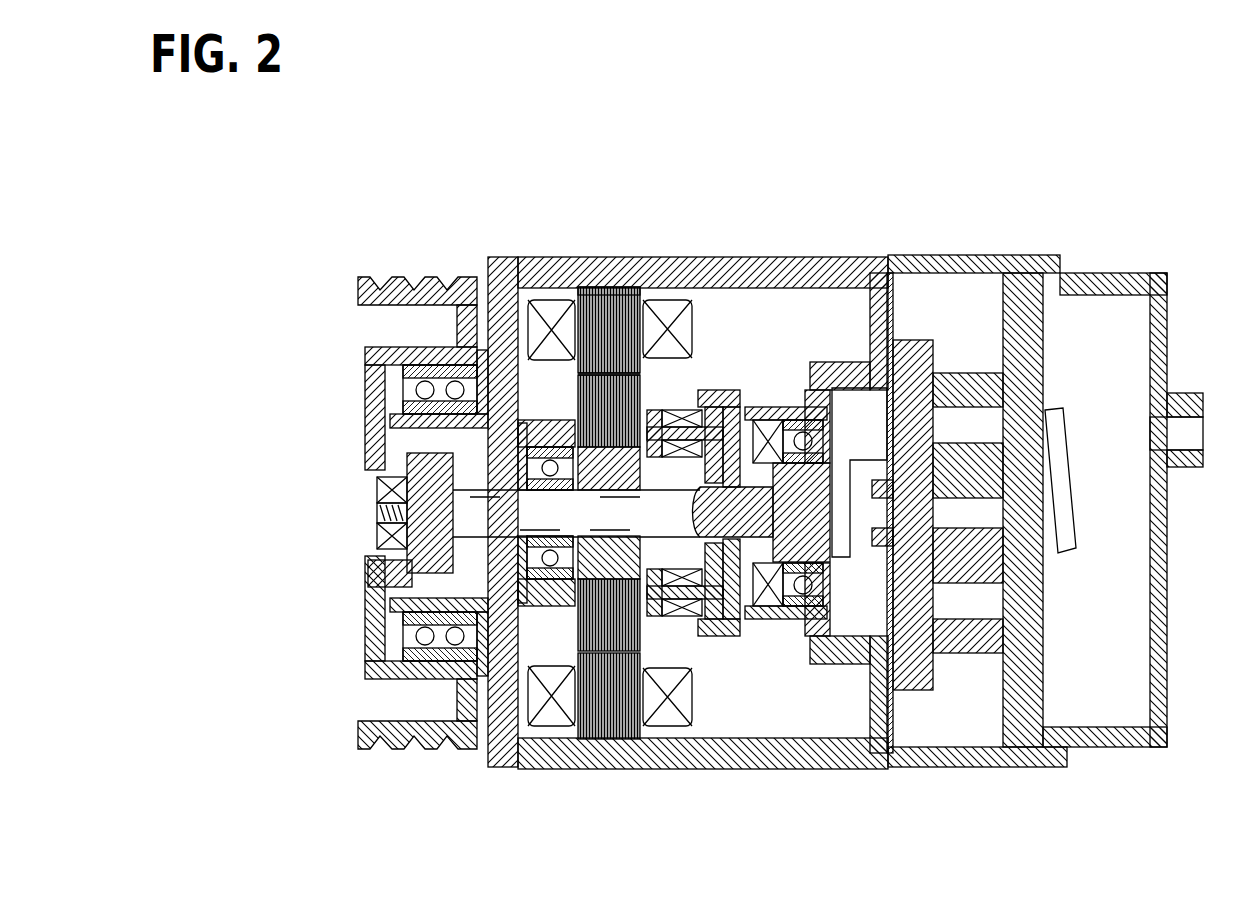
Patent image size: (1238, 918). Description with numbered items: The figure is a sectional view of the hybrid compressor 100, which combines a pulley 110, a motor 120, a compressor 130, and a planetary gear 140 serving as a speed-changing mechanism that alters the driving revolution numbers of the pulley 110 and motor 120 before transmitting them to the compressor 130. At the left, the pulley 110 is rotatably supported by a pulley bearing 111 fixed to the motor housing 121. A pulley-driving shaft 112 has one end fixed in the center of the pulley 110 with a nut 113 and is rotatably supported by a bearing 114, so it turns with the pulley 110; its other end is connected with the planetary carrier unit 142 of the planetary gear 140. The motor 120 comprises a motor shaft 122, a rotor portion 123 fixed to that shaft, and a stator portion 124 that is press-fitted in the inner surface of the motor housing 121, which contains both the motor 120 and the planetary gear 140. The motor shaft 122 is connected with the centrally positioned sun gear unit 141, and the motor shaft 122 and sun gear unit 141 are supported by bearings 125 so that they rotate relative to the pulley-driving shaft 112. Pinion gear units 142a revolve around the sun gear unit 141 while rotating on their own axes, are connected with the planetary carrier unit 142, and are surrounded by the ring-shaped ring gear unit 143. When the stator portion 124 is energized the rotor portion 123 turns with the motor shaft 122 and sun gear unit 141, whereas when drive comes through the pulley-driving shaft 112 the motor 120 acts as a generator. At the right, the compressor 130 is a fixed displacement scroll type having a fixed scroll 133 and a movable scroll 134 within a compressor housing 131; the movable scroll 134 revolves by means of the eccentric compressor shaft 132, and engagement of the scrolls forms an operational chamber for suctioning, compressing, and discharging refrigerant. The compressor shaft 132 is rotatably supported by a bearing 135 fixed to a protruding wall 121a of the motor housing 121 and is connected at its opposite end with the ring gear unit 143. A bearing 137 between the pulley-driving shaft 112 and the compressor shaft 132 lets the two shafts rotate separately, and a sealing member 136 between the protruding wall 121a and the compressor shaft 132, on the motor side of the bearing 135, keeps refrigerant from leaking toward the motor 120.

The hybrid compressor 100 is at (481, 240).
The pulley 110 is at (440, 277).
The pulley bearing 111 is at (430, 393).
The pulley-driving shaft 112 is at (553, 507).
The nut 113 is at (380, 492).
The bearing 114 is at (390, 586).
The motor 120 is at (548, 240).
The motor housing 121 is at (537, 257).
The protruding wall 121a is at (758, 407).
The motor shaft 122 is at (607, 460).
The rotor portion 123 is at (603, 388).
The stator portion 124 is at (568, 257).
The bearings 125 is at (640, 700).
The compressor 130 is at (1058, 240).
The compressor housing 131 is at (910, 340).
The compressor shaft 132 is at (812, 398).
The fixed scroll 133 is at (1023, 300).
The movable scroll 134 is at (945, 373).
The bearing 135 is at (790, 622).
The sealing member 136 is at (752, 610).
The bearing 137 is at (735, 610).
The planetary gear 140 is at (757, 127).
The sun gear unit 141 is at (595, 295).
The planetary carrier unit 142 is at (730, 390).
The pinion gear units 142a is at (696, 405).
The ring gear unit 143 is at (625, 300).